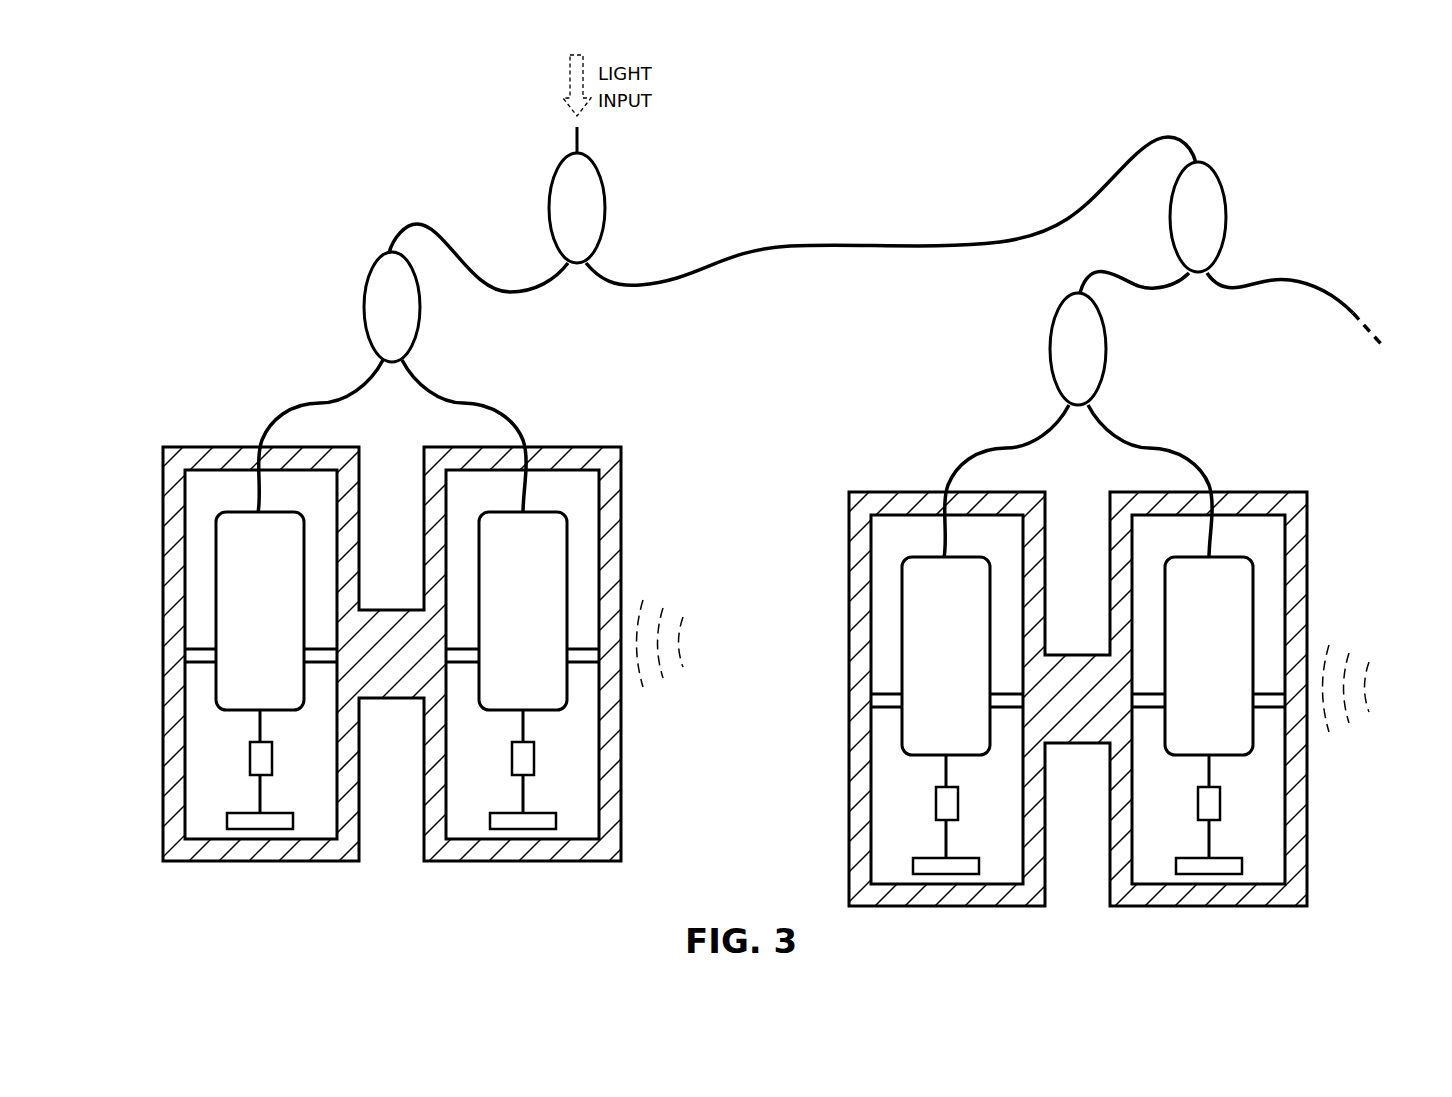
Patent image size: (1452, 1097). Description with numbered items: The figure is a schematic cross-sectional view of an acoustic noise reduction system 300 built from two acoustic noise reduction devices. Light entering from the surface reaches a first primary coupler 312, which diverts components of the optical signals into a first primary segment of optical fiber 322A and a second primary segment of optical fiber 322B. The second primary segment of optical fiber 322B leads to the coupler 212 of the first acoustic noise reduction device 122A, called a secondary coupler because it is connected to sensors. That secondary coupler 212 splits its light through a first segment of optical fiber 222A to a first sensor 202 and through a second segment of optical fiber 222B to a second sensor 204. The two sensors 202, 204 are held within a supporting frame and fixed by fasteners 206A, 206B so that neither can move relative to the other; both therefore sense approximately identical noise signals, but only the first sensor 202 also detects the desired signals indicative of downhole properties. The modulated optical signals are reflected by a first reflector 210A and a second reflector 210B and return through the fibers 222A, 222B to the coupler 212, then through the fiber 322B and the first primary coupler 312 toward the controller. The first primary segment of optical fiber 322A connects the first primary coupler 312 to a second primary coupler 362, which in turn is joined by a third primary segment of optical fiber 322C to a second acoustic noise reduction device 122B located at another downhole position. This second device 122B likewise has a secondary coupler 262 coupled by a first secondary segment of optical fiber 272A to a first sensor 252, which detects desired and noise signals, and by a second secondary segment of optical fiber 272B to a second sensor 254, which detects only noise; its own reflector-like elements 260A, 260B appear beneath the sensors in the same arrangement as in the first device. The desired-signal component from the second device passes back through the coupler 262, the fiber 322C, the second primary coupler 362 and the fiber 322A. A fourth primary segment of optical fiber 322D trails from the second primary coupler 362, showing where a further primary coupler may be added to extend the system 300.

The acoustic noise reduction system 300 is at (440, 126).
The first primary coupler 312 is at (549, 209).
The coupler 212 is at (365, 303).
The second primary coupler 362 is at (1226, 211).
The secondary coupler 262 is at (1050, 349).
The first primary segment of optical fiber 322A is at (628, 290).
The second primary segment of optical fiber 322B is at (417, 224).
The third primary segment of optical fiber 322C is at (1157, 290).
The fourth primary segment of optical fiber 322D is at (1300, 282).
The first segment of optical fiber 222A is at (470, 403).
The second segment of optical fiber 222B is at (313, 403).
The first secondary segment of optical fiber 272A is at (1156, 448).
The second secondary segment of optical fiber 272B is at (999, 448).
The first acoustic noise reduction device 122A is at (238, 334).
The second acoustic noise reduction device 122B is at (921, 377).
The first sensor 202 is at (574, 573).
The second sensor 204 is at (208, 598).
The fastener 206A is at (463, 648).
The fastener 206B is at (135, 642).
The first reflector 210A is at (535, 755).
The second reflector 210B is at (249, 758).
The first sensor 252 is at (1262, 618).
The second sensor 254 is at (894, 593).
The mass assembly 260A is at (1221, 800).
The mass assembly 260B is at (935, 803).